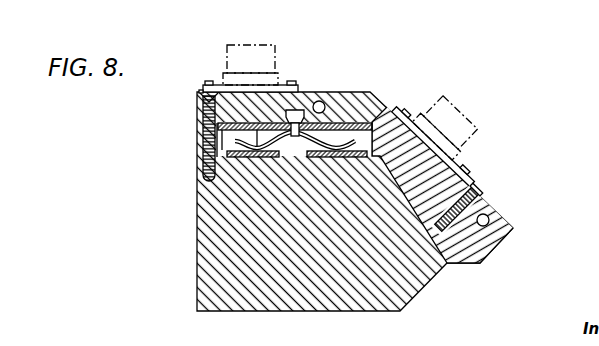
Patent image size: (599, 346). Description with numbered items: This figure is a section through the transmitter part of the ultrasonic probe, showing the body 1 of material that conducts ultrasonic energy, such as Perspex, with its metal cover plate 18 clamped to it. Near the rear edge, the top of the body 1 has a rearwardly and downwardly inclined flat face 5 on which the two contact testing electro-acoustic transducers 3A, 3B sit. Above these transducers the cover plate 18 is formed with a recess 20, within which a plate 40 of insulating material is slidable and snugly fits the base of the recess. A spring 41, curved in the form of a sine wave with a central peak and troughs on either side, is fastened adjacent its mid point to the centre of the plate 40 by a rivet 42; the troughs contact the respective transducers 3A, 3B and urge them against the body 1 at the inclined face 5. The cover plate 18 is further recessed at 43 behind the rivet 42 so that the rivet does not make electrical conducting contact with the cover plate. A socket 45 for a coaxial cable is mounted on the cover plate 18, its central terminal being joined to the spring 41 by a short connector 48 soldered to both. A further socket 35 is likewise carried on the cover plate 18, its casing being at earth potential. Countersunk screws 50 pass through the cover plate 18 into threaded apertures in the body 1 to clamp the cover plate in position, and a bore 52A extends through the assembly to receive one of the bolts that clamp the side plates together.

The body 1 is at (308, 257).
The contact testing transducer 3A is at (243, 157).
The contact testing transducer 3B is at (338, 157).
The inclined flat face 5 is at (280, 158).
The cover plate 18 is at (490, 210).
The recess 20 is at (332, 133).
The socket 35 is at (452, 99).
The plate of insulating material 40 is at (381, 111).
The spring 41 is at (357, 150).
The rivet 42 is at (288, 110).
The further recess 43 is at (301, 122).
The socket 45 is at (227, 58).
The short connector 48 is at (198, 110).
The countersunk screws 50 is at (201, 91).
The bore 52A is at (320, 101).